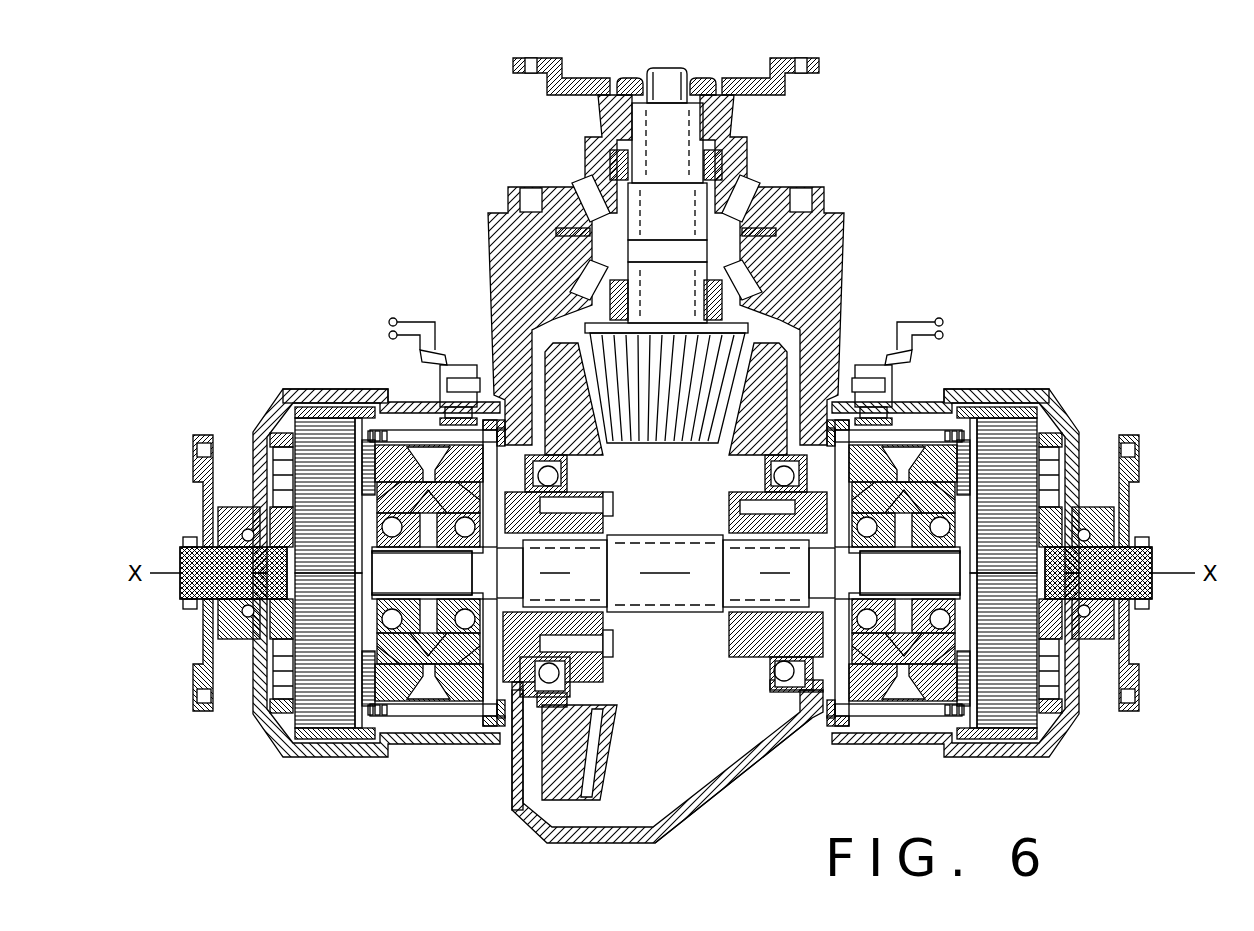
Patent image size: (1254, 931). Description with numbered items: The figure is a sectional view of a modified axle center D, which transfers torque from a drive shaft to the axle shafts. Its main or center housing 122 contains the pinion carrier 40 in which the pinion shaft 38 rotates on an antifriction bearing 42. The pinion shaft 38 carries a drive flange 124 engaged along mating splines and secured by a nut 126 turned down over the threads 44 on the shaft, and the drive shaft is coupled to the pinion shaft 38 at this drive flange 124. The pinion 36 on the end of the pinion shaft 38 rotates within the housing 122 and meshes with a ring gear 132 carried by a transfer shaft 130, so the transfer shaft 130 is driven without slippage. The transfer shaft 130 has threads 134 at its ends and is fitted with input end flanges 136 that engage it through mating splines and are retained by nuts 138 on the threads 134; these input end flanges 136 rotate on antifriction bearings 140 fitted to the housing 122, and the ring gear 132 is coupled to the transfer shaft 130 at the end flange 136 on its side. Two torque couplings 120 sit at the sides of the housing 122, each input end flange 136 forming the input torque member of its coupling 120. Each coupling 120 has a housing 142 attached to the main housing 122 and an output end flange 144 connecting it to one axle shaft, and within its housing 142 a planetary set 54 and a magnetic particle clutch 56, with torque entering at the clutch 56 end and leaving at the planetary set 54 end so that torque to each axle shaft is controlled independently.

The pinion 36 is at (720, 365).
The pinion shaft 38 is at (680, 135).
The pinion carrier 40 is at (560, 200).
The antifriction bearing 42 is at (590, 180).
The threads 44 is at (668, 66).
The planetary set 54 is at (293, 717).
The magnetic particle clutch 56 is at (412, 725).
The torque coupling 120 is at (264, 403).
The main housing 122 is at (545, 838).
The drive flange 124 is at (745, 82).
The nut 126 is at (589, 92).
The transfer shaft 130 is at (660, 613).
The ring gear 132 is at (573, 749).
The threads 134 is at (605, 510).
The input end flange 136 is at (512, 782).
The nut 138 is at (560, 490).
The antifriction bearing 140 is at (568, 680).
The housing 142 is at (328, 388).
The output end flange 144 is at (1143, 500).
The modified axle center D is at (698, 444).